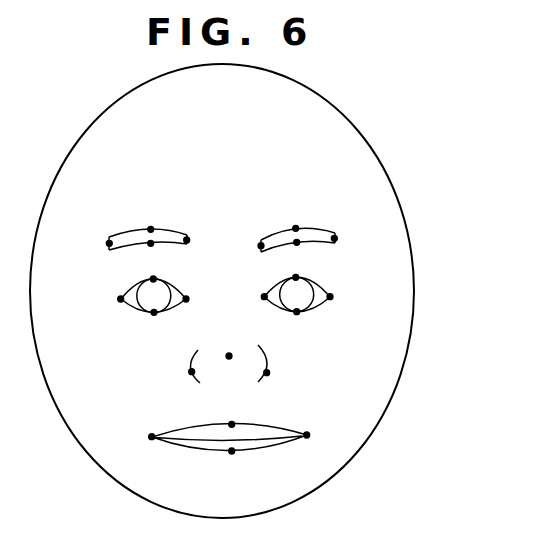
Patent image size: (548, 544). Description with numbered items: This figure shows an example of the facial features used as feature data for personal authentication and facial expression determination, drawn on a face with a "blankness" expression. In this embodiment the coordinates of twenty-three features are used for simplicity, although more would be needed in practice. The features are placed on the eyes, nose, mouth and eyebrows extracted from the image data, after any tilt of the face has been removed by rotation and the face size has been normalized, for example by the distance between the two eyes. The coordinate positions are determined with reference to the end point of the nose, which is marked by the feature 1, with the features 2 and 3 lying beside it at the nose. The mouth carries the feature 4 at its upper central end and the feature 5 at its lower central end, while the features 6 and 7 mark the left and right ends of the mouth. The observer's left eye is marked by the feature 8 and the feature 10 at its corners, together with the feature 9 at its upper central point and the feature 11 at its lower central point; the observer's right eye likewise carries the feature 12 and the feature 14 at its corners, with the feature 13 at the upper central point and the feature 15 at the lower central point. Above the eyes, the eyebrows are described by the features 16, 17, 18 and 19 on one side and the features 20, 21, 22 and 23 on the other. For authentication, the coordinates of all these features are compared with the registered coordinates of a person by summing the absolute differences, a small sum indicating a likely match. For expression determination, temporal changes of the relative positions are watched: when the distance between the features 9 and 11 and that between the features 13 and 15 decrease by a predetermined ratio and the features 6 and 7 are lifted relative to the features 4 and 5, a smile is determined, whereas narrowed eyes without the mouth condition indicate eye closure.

The feature 1 is at (234, 353).
The feature 2 is at (185, 373).
The feature 3 is at (274, 375).
The feature of upper central end of the mouth 4 is at (234, 412).
The feature of lower central end of the mouth 5 is at (231, 460).
The feature of left end of the mouth 6 is at (146, 437).
The feature of right end of the mouth 7 is at (312, 437).
The feature 8 is at (115, 299).
The feature of upper central point of the observer's left eye 9 is at (155, 268).
The feature 10 is at (197, 297).
The feature of lower central point of the observer's left eye 11 is at (155, 321).
The feature 12 is at (253, 298).
The feature of upper central point of the observer's right eye 13 is at (293, 267).
The feature 14 is at (340, 291).
The feature of lower central point of the observer's right eye 15 is at (298, 321).
The feature 16 is at (98, 243).
The feature 17 is at (151, 221).
The feature 18 is at (140, 250).
The feature 19 is at (196, 242).
The feature 20 is at (250, 245).
The feature 21 is at (299, 219).
The feature 22 is at (344, 238).
The feature 23 is at (309, 250).